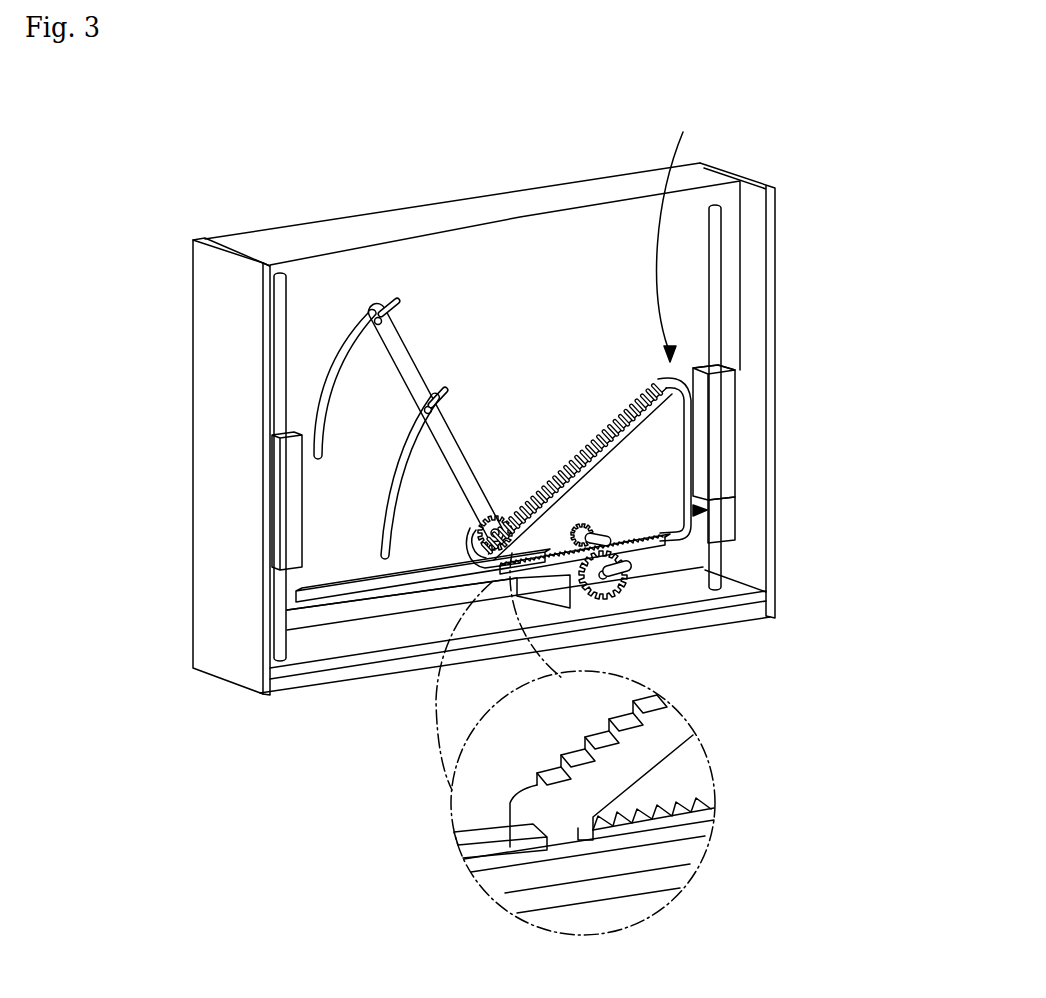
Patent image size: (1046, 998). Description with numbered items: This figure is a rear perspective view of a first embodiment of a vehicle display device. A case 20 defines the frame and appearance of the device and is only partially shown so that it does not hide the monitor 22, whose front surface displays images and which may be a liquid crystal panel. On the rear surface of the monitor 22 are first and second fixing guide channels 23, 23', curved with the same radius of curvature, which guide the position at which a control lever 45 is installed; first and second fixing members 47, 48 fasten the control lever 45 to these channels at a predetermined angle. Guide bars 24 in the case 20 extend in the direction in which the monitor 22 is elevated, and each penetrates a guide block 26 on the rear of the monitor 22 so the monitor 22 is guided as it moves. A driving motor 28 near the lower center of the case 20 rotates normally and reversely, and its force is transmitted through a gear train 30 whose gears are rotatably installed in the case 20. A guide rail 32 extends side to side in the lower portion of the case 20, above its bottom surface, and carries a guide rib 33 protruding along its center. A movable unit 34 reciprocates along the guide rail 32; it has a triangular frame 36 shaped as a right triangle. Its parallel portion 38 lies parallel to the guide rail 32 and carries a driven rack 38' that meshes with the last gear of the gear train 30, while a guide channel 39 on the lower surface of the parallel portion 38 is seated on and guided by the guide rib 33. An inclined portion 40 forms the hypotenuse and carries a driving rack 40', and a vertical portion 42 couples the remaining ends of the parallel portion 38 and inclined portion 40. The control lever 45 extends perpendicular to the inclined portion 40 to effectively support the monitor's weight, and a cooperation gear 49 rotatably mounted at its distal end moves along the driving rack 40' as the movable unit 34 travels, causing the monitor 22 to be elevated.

The case 20 is at (768, 570).
The monitor 22 is at (528, 205).
The first fixing guide channel 23 is at (395, 476).
The second fixing guide channel 23' is at (325, 318).
The guide bar 24 is at (719, 250).
The guide block 26 is at (727, 432).
The driving motor 28 is at (527, 580).
The gear train 30 is at (627, 588).
The guide rail 32 is at (318, 597).
The guide rib 33 is at (463, 838).
The movable unit 34 is at (678, 234).
The triangular frame 36 is at (695, 513).
The parallel portion 38 is at (605, 747).
The driven rack 38' is at (640, 660).
The guide channel 39 is at (533, 830).
The inclined portion 40 is at (671, 675).
The driving rack 40' is at (612, 433).
The vertical portion 42 is at (698, 408).
The control lever 45 is at (478, 486).
The first fixing member 47 is at (445, 410).
The second fixing member 48 is at (380, 308).
The cooperation gear 49 is at (478, 536).